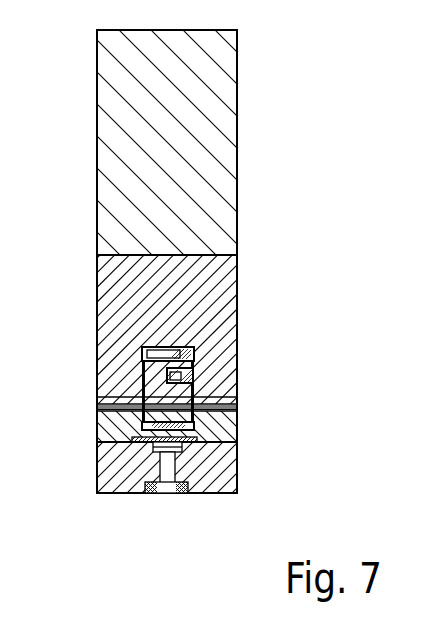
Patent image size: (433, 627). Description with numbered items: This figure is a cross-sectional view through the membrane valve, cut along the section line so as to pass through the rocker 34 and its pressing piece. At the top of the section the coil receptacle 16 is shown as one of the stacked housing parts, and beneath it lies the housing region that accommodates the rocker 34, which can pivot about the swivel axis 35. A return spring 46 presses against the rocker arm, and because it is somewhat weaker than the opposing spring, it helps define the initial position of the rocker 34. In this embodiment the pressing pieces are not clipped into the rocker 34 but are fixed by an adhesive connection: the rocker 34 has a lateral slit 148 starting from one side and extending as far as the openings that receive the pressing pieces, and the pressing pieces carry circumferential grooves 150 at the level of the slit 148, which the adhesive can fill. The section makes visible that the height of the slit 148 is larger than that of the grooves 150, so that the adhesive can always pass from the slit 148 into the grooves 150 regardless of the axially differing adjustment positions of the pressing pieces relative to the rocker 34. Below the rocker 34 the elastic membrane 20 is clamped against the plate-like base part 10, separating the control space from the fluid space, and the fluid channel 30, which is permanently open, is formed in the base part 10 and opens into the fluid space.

The coil receptacle 16 is at (103, 70).
The return spring 46 is at (143, 355).
The rocker 34 is at (137, 380).
The circumferential grooves 150 is at (238, 333).
The lateral slit 148 is at (193, 372).
The swivel axis 35 is at (238, 408).
The membrane 20 is at (135, 440).
The base part 10 is at (230, 465).
The fluid channel 30 is at (165, 460).